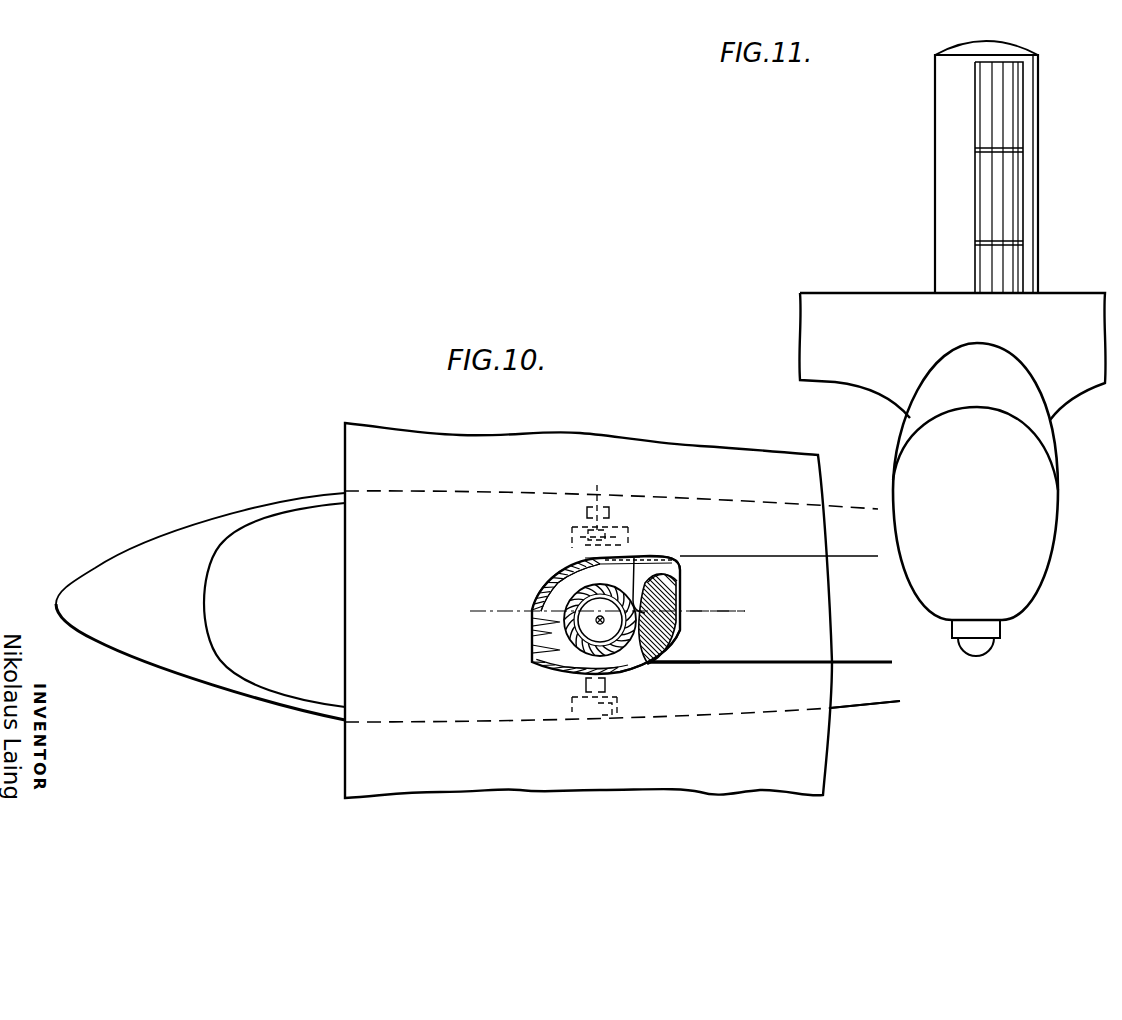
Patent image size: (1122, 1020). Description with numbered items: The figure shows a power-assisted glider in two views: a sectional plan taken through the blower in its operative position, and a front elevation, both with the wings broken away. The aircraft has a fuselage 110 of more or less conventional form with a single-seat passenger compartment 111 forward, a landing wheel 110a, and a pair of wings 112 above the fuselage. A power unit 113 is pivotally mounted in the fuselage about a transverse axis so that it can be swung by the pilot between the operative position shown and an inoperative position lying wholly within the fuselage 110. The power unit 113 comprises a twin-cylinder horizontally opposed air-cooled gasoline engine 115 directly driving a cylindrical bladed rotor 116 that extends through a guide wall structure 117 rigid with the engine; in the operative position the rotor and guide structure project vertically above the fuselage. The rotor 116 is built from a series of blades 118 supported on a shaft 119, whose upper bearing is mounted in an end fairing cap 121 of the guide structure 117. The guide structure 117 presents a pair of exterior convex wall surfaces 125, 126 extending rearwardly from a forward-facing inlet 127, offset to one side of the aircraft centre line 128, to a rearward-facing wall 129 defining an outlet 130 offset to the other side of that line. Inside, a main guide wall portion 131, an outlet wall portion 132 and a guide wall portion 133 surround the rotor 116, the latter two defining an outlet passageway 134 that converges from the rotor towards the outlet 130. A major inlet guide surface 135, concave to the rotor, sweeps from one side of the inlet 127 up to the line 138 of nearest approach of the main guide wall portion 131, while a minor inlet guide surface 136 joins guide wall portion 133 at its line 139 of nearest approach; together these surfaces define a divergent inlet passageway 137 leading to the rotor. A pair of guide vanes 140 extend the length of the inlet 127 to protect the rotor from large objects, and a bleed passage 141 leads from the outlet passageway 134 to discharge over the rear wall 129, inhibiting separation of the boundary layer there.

In FIG. 10, the fuselage 110 is at (877, 684).
In FIG. 11, the fuselage 110 is at (1012, 514).
In FIG. 11, the landing wheel 110a is at (980, 648).
In FIG. 10, the passenger compartment 111 is at (293, 535).
In FIG. 11, the passenger compartment 111 is at (938, 397).
In FIG. 11, the wings 112 is at (822, 330).
In FIG. 10, the power unit 113 is at (643, 557).
In FIG. 10, the engine 115 is at (597, 490).
In FIG. 10, the rotor 116 is at (574, 656).
In FIG. 11, the rotor 116 is at (1003, 125).
In FIG. 10, the guide wall structure 117 is at (668, 554).
In FIG. 11, the guide wall structure 117 is at (936, 183).
In FIG. 10, the blades 118 is at (620, 673).
In FIG. 10, the shaft 119 is at (628, 666).
In FIG. 11, the end fairing cap 121 is at (958, 48).
In FIG. 10, the exterior convex wall surface 125 is at (600, 698).
In FIG. 10, the exterior convex wall surface 126 is at (592, 566).
In FIG. 10, the inlet 127 is at (532, 645).
In FIG. 10, the aircraft centre line 128 is at (735, 612).
In FIG. 10, the rearward-facing wall 129 is at (690, 606).
In FIG. 10, the outlet 130 is at (683, 562).
In FIG. 10, the main guide wall portion 131 is at (635, 557).
In FIG. 10, the outlet wall portion 132 is at (662, 597).
In FIG. 10, the guide wall portion 133 is at (653, 551).
In FIG. 10, the outlet passageway 134 is at (655, 581).
In FIG. 10, the major inlet guide surface 135 is at (552, 667).
In FIG. 10, the minor inlet guide surface 136 is at (545, 605).
In FIG. 10, the inlet passageway 137 is at (553, 633).
In FIG. 10, the line of nearest approach 138 is at (652, 657).
In FIG. 10, the line of nearest approach 139 is at (578, 580).
In FIG. 10, the guide vanes 140 is at (556, 622).
In FIG. 10, the bleed passage 141 is at (673, 628).